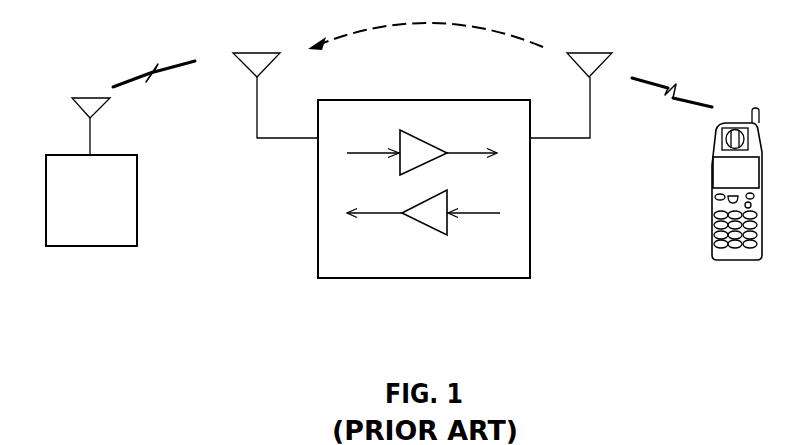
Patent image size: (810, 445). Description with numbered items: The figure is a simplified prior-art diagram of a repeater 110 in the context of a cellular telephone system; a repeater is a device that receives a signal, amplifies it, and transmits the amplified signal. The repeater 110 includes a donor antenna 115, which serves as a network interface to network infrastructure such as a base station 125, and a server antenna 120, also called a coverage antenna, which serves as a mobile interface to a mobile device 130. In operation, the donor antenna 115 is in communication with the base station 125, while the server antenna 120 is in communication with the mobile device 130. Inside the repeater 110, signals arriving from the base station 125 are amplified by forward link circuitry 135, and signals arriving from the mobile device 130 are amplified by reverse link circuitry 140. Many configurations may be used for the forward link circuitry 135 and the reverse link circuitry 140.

The repeater 110 is at (468, 278).
The donor antenna 115 is at (270, 63).
The server antenna 120 is at (578, 65).
The base station 125 is at (107, 246).
The mobile device 130 is at (735, 260).
The forward link circuitry 135 is at (422, 140).
The reverse link circuitry 140 is at (425, 224).